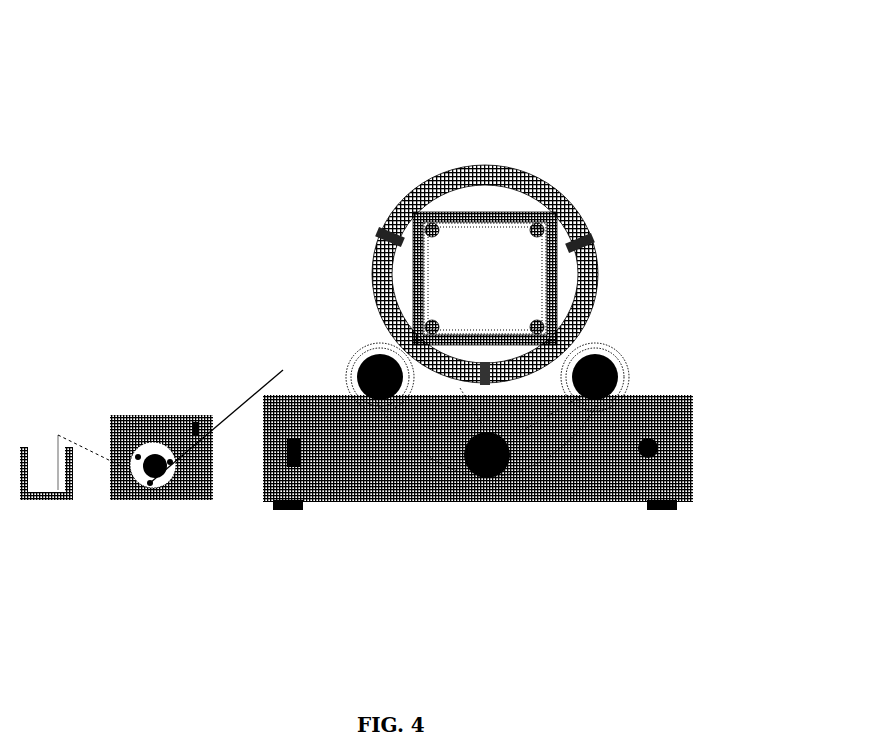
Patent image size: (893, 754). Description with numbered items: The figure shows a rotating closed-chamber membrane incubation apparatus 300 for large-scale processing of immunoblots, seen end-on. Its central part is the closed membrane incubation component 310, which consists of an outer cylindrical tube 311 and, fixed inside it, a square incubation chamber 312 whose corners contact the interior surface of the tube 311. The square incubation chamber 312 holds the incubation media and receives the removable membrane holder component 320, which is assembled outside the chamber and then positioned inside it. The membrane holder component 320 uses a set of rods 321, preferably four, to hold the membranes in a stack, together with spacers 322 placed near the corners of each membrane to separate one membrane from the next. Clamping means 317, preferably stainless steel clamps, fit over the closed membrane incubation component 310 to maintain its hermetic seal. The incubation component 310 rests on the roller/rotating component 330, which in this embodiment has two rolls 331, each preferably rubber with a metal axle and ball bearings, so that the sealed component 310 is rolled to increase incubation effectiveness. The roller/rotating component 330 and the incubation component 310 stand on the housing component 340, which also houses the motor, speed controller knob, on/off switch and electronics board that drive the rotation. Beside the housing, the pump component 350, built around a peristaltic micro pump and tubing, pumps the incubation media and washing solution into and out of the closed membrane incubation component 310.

The rotating closed dual-chamber membrane incubation apparatus 300 is at (557, 110).
The closed membrane incubation component 310 is at (398, 180).
The cylindrical tube 311 is at (572, 203).
The square incubation chamber 312 is at (560, 276).
The clamping means 317 is at (590, 237).
The removable membrane holder component 320 is at (548, 313).
The rods 321 is at (432, 330).
The spacers 322 is at (432, 319).
The roller/rotating component 330 is at (640, 377).
The roll 331 is at (620, 369).
The housing component 340 is at (513, 517).
The pump component 350 is at (193, 512).